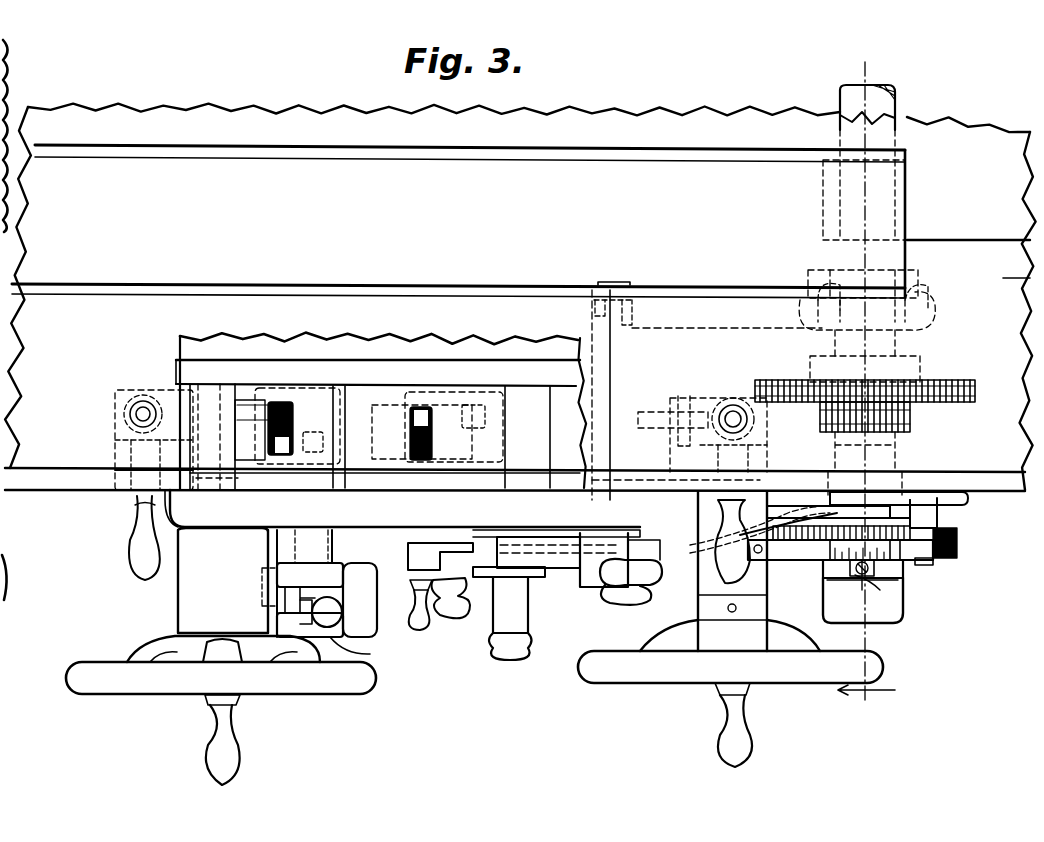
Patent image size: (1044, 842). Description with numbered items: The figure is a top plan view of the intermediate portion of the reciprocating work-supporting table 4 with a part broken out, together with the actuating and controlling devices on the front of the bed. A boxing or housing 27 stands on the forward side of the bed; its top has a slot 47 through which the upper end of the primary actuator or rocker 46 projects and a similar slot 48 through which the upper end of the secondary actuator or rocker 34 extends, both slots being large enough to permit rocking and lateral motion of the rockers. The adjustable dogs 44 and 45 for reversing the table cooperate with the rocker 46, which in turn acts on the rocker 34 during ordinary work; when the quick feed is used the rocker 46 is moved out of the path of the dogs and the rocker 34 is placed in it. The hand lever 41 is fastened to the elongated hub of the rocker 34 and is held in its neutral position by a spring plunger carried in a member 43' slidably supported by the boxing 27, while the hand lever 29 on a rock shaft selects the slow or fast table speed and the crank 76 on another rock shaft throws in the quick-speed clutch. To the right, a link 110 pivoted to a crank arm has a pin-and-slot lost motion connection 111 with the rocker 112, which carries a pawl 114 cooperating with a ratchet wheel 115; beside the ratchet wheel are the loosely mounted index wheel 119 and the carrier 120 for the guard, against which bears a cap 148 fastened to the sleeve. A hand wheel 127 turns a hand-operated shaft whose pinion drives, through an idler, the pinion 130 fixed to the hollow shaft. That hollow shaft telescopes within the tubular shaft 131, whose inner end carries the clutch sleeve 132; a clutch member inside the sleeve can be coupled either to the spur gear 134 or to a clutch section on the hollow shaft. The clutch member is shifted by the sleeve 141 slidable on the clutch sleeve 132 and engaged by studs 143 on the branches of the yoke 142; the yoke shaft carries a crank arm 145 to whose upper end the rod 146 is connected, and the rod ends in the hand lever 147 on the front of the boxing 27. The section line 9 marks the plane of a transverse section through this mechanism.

The work-supporting table 4 is at (520, 297).
The section line 9 is at (866, 386).
The boxing or housing 27 is at (182, 508).
The hand lever 29 is at (509, 613).
The rocker 34 is at (280, 400).
The hand lever 41 is at (330, 648).
The member 43' is at (320, 583).
The adjustable dog 44 is at (650, 410).
The adjustable dog 45 is at (246, 405).
The rocker 46 is at (422, 410).
The slot 47 is at (470, 392).
The slot 48 is at (320, 378).
The hand lever or crank 76 is at (668, 565).
The link 110 is at (792, 520).
The lost motion connection 111 is at (930, 514).
The rocker 112 is at (968, 500).
The pawl 114 is at (880, 562).
The ratchet wheel 115 is at (940, 540).
The index wheel 119 is at (950, 555).
The carrier 120 is at (880, 585).
The hand wheel 127 is at (730, 629).
The pinion 130 is at (910, 422).
The tubular shaft 131 is at (885, 100).
The clutch sleeve 132 is at (905, 168).
The spur gear 134 is at (945, 400).
The sleeve 141 is at (810, 278).
The yoke 142 is at (920, 328).
The studs 143 is at (908, 290).
The crank arm 145 is at (625, 286).
The rod 146 is at (596, 340).
The hand lever 147 is at (593, 582).
The cap 148 is at (880, 620).